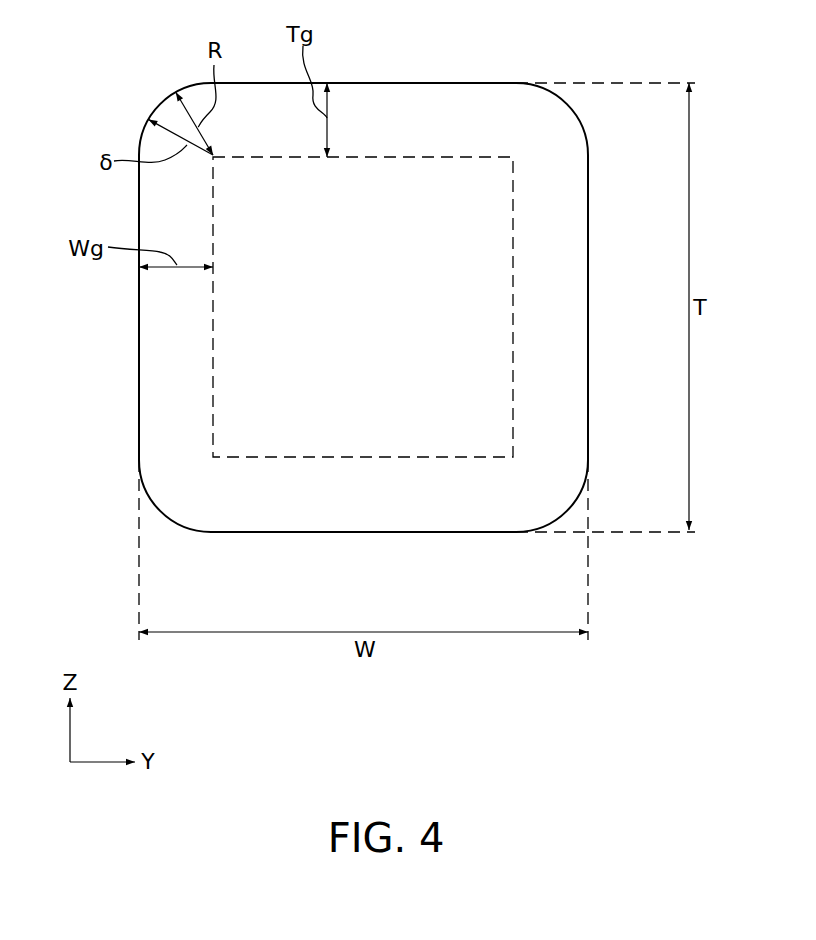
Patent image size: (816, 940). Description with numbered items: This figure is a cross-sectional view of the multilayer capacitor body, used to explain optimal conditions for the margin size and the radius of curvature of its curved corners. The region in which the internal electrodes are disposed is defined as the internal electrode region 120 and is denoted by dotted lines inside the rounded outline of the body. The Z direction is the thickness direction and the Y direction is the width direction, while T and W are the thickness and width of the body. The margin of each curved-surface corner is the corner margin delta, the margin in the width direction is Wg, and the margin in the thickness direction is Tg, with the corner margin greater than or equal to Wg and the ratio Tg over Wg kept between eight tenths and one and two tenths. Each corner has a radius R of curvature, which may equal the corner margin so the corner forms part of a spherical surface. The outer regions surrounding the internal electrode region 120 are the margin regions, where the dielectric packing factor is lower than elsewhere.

The internal electrode region 120 is at (243, 458).